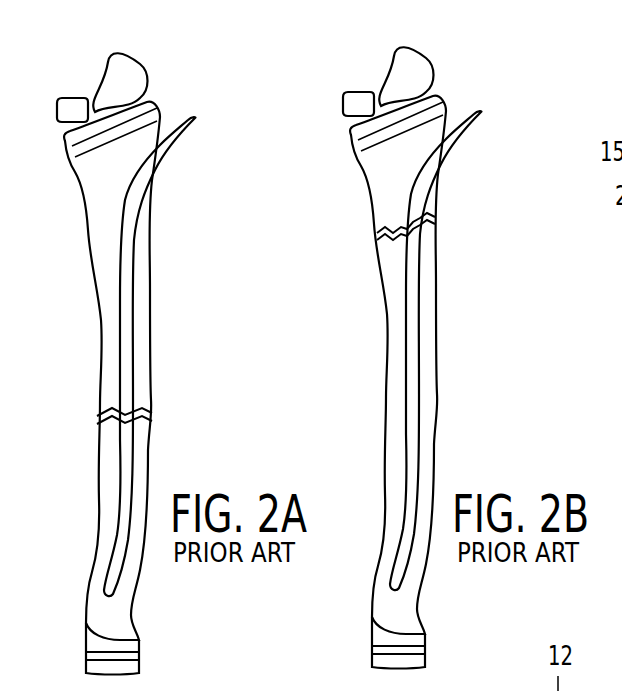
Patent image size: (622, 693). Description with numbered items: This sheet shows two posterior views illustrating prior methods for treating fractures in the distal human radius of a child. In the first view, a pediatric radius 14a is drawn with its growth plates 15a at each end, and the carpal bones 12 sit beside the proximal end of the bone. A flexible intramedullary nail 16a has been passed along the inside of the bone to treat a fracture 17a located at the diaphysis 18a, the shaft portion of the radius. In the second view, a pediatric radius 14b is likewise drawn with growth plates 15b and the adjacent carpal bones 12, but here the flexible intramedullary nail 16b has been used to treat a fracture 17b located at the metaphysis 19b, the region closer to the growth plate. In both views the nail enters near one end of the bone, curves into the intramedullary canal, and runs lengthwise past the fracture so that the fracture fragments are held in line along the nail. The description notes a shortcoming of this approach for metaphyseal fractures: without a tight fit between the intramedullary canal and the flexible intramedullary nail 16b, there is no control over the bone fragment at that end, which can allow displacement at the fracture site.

In FIG. 2A, the carpal bones 12 is at (123, 80).
In FIG. 2B, the carpal bones 12 is at (413, 70).
In FIG. 2A, the pediatric radius 14a is at (93, 590).
In FIG. 2B, the pediatric radius 14b is at (385, 595).
In FIG. 2A, the growth plates 15a is at (73, 148).
In FIG. 2B, the growth plates 15b is at (360, 142).
In FIG. 2A, the flexible intramedullary nail 16a is at (127, 298).
In FIG. 2B, the flexible intramedullary nail 16b is at (412, 313).
In FIG. 2A, the fracture 17a is at (152, 415).
In FIG. 2B, the fracture 17b is at (443, 222).
In FIG. 2A, the diaphysis 18a is at (86, 378).
In FIG. 2B, the metaphysis 19b is at (350, 210).